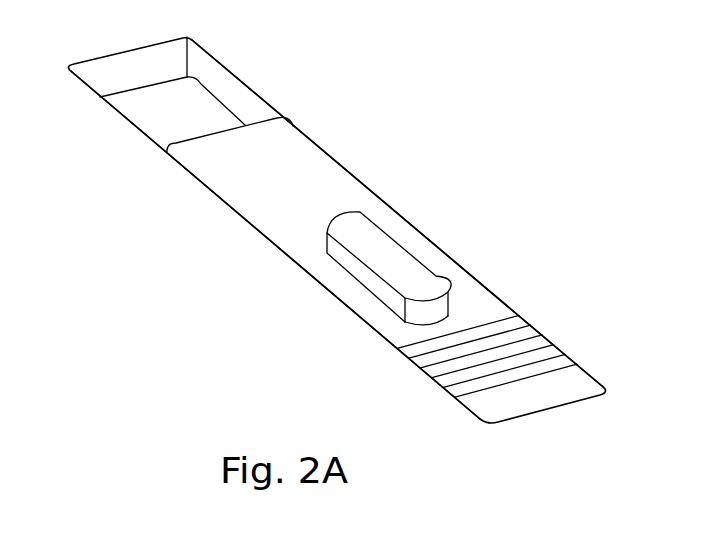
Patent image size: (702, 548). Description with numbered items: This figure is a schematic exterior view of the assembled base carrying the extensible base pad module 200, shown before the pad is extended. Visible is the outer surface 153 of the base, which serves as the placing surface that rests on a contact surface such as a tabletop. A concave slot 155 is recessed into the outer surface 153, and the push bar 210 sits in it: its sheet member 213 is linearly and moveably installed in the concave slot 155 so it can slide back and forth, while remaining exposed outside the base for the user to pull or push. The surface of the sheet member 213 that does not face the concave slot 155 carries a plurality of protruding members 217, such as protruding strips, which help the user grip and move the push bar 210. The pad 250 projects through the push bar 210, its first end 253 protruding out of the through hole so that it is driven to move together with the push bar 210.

The extensible base pad module 200 is at (441, 73).
The outer surface 153 is at (575, 217).
The push bar 210 is at (287, 153).
The concave slot 155 is at (190, 107).
The sheet member 213 is at (241, 188).
The pad 250 is at (418, 253).
The first end 253 is at (383, 242).
The protruding members 217 is at (560, 358).